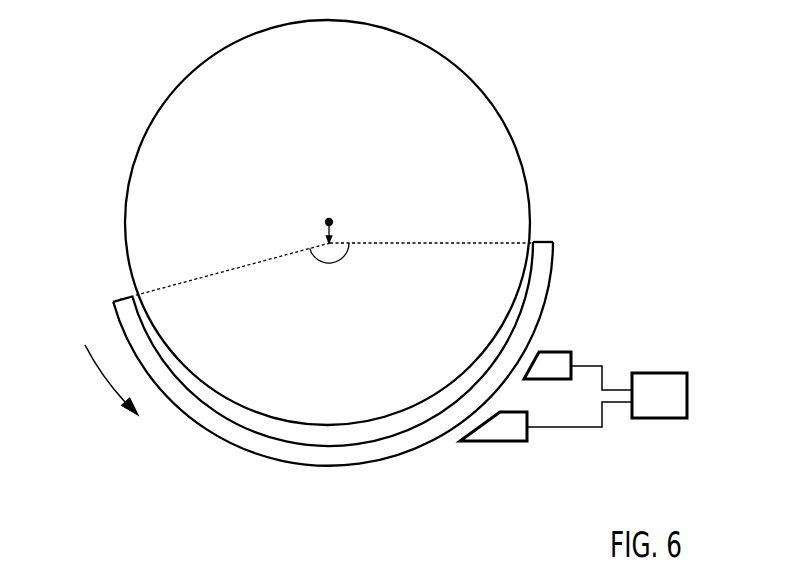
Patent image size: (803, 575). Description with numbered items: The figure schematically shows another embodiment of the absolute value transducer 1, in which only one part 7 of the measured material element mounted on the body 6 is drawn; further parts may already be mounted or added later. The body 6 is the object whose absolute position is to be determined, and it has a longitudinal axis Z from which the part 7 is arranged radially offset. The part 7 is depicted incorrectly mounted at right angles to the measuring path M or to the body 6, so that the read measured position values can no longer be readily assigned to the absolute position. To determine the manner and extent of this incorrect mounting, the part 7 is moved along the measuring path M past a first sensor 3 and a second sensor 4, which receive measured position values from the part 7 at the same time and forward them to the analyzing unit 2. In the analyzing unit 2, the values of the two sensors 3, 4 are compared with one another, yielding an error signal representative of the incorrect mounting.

The absolute value transducer 1 is at (658, 321).
The analyzing unit 2 is at (653, 409).
The first sensor 3 is at (497, 441).
The second sensor 4 is at (558, 352).
The body 6 is at (364, 186).
The part of the measured material element 7 is at (408, 453).
The longitudinal axis Z is at (325, 219).
The measuring path M is at (103, 378).